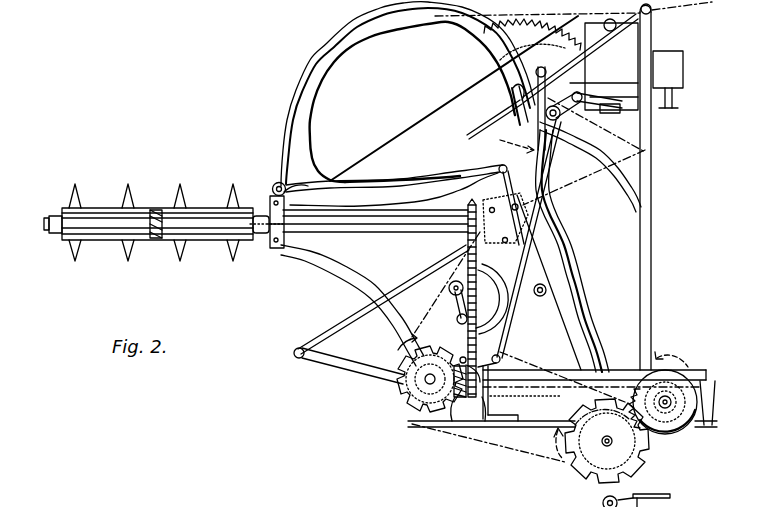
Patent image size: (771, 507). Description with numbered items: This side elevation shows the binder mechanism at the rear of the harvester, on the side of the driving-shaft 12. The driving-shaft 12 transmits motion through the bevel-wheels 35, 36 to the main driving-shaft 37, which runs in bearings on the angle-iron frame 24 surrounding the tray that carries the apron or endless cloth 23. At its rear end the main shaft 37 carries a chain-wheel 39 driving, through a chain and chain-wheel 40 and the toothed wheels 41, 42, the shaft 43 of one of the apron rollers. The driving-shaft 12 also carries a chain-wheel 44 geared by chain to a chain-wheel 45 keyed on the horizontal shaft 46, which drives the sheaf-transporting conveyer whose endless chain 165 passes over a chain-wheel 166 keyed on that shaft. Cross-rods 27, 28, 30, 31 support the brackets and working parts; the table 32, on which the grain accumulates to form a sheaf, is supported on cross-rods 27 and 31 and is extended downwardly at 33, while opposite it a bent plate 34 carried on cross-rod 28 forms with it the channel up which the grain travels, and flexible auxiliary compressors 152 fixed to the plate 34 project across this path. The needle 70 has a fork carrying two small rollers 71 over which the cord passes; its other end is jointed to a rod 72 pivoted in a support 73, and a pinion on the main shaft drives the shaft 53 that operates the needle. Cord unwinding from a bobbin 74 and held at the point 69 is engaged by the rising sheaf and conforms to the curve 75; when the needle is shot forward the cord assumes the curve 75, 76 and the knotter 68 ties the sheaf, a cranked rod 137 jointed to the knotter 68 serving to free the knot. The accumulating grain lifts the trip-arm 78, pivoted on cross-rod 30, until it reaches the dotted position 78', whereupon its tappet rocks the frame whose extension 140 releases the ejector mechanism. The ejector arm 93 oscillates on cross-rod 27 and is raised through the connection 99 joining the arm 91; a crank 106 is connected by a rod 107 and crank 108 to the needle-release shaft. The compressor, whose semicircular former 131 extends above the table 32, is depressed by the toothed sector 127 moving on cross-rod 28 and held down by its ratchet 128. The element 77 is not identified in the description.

The driving-shaft 12 is at (613, 370).
The apron or endless cloth 23 is at (313, 265).
The frame of angle-iron 24 is at (420, 428).
The cross-rod 27 is at (272, 184).
The cross-rod 28 is at (588, 63).
The cross-rod 30 is at (653, 182).
The cross-rod 31 is at (512, 170).
The table 32 is at (393, 177).
The extended portion of the table 33 is at (566, 246).
The bent plate 34 is at (558, 180).
The bevel-wheel 35 is at (456, 397).
The bevel-wheel 36 is at (418, 436).
The main driving-shaft 37 is at (425, 382).
The chain-wheel 39 is at (388, 380).
The chain-wheel 40 is at (572, 445).
The toothed wheel 41 is at (637, 455).
The toothed wheel 42 is at (685, 434).
The shaft 43 is at (672, 402).
The chain-wheel 44 is at (478, 392).
The chain-wheel 45 is at (462, 228).
The horizontal shaft 46 is at (215, 234).
The shaft 53 is at (452, 303).
The knotter 68 is at (668, 64).
The holding point 69 is at (672, 106).
The needle 70 is at (414, 290).
The small rollers 71 is at (518, 200).
The rod 72 is at (323, 361).
The support 73 is at (392, 392).
The bobbin 74 is at (543, 298).
The curve 75 is at (335, 74).
The curve 76 is at (507, 142).
The arm 77 is at (602, 124).
The trip-arm 78 is at (472, 124).
The trip-arm position 78' is at (508, 47).
The arm 91 is at (320, 213).
The ejector arm 93 is at (300, 178).
The connection 99 is at (398, 135).
The crank 106 is at (590, 79).
The rod 107 is at (557, 182).
The crank 108 is at (484, 354).
The toothed sector 127 is at (621, 36).
The ratchet 128 is at (492, 78).
The semicircular gage or former 131 is at (335, 40).
The cranked rod 137 is at (650, 132).
The extension 140 is at (513, 106).
The auxiliary compressors 152 is at (594, 162).
The endless chain 165 is at (103, 203).
The chain-wheel 166 is at (152, 240).